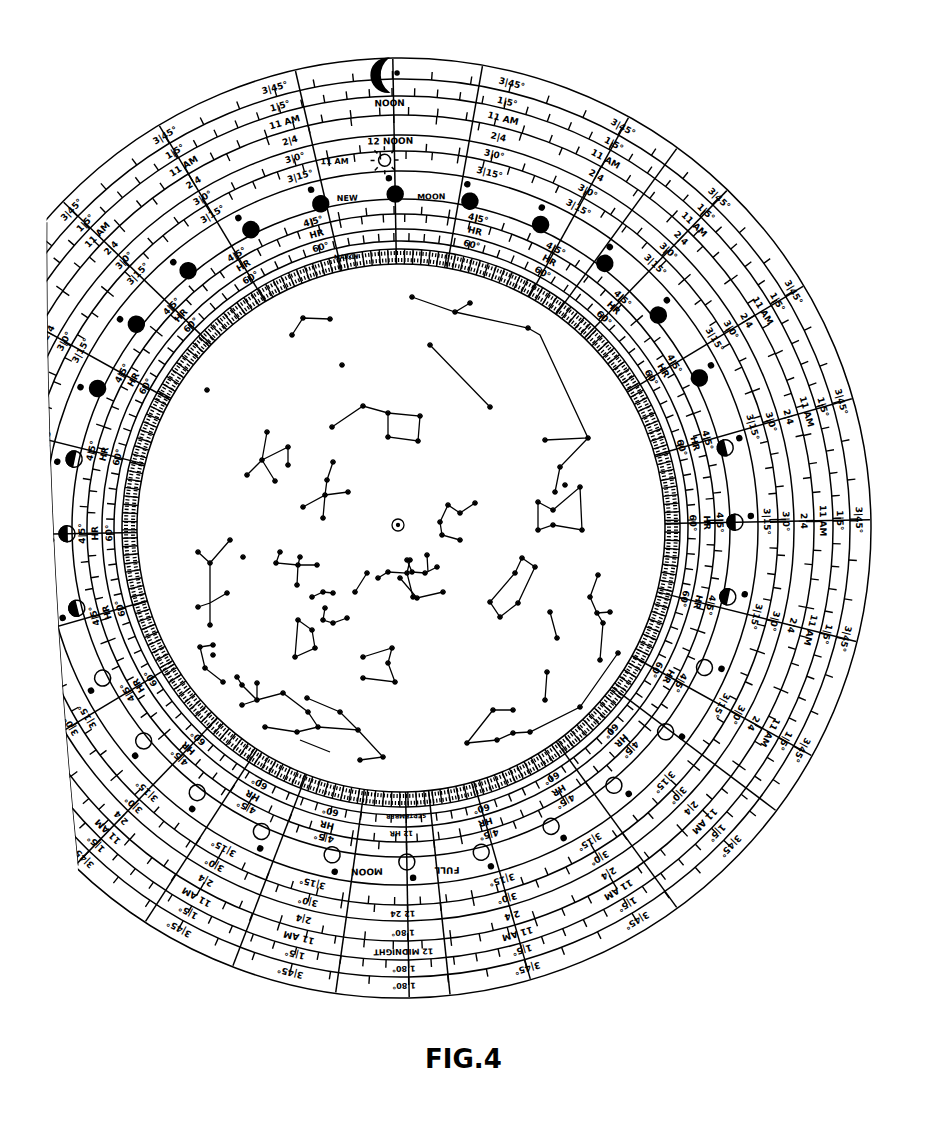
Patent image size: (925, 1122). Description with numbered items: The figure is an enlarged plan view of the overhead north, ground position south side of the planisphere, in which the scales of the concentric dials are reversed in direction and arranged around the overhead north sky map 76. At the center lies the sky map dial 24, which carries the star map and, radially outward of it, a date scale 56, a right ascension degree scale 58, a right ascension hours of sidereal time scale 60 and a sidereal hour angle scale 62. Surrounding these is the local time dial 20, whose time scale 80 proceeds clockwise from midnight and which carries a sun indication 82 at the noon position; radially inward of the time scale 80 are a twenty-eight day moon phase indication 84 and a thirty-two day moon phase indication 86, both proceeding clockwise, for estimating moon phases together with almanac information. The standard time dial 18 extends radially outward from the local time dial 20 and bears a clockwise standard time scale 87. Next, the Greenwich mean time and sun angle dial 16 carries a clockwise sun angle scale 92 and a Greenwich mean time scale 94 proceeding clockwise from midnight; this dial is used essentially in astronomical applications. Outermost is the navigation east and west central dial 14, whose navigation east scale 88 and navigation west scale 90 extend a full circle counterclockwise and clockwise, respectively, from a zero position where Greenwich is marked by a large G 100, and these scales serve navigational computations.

The navigation east and west central dial 14 is at (222, 94).
The Greenwich mean time and sun angle dial 16 is at (330, 98).
The standard time dial 18 is at (473, 137).
The local time dial 20 is at (640, 190).
The sky map dial 24 is at (703, 418).
The date scale 56 is at (203, 688).
The right ascension degree scale 58 is at (298, 738).
The right ascension hours of sidereal time scale 60 is at (345, 795).
The sidereal hour angle scale 62 is at (492, 770).
The overhead north sky map 76 is at (450, 641).
The time scale 80 is at (627, 820).
The sun indication 82 is at (381, 168).
The 28 day moon phase indication 84 is at (553, 753).
The 32 day moon phase indication 86 is at (570, 750).
The standard time scale 87 is at (707, 770).
The navigation east scale 88 is at (143, 900).
The navigation west scale 90 is at (225, 958).
The sun angle scale 92 is at (328, 997).
The Greenwich mean time scale 94 is at (437, 960).
The large G 100 is at (391, 60).